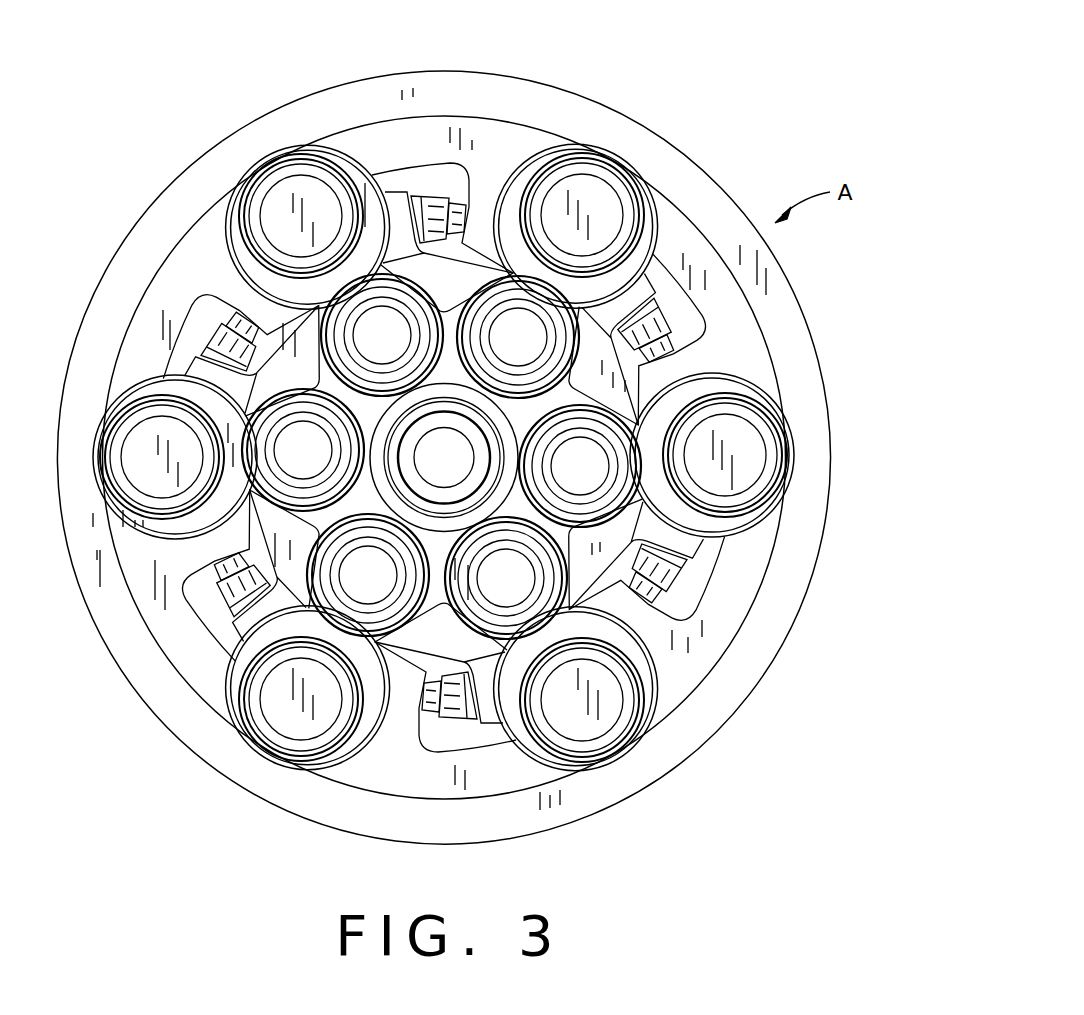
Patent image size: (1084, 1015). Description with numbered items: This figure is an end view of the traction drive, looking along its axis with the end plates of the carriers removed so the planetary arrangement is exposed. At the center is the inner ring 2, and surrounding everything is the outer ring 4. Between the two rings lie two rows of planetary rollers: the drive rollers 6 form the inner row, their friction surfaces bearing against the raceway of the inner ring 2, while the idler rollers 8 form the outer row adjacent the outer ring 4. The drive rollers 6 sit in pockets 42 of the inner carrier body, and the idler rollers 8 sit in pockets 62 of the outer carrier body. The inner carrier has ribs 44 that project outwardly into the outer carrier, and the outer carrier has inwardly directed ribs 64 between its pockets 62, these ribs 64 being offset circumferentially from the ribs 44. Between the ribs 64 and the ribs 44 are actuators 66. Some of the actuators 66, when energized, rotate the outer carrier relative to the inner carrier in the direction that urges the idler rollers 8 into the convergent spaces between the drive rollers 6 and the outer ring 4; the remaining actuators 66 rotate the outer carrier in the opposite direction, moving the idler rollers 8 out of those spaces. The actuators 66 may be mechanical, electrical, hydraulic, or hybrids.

The inner ring 2 is at (390, 410).
The outer ring 4 is at (560, 102).
The drive roller 6 is at (609, 504).
The idler roller 8 is at (592, 178).
The pocket 42 is at (290, 474).
The rib 44 is at (395, 192).
The pocket 62 is at (250, 133).
The rib 64 is at (481, 207).
The actuator 66 is at (437, 196).